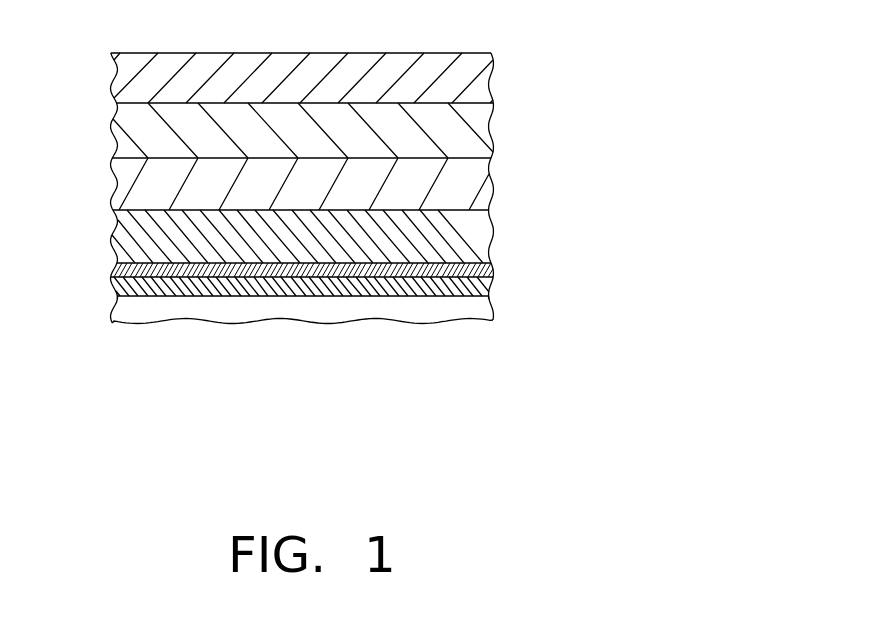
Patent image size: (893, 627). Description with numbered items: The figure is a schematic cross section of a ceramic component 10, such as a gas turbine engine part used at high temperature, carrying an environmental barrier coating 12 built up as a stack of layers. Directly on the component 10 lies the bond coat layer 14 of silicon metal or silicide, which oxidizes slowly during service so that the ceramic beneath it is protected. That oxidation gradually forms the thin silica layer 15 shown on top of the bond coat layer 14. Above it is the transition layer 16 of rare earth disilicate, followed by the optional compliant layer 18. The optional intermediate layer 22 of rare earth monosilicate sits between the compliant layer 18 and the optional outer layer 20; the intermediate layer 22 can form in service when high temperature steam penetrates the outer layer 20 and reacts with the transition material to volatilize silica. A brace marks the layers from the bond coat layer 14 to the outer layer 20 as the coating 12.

The component 10 is at (195, 312).
The environmental barrier coating 12 is at (95, 53).
The bond coat layer 14 is at (475, 287).
The silica layer 15 is at (488, 272).
The transition layer 16 is at (460, 240).
The compliant layer 18 is at (473, 185).
The outer layer 20 is at (480, 83).
The intermediate layer 22 is at (457, 135).